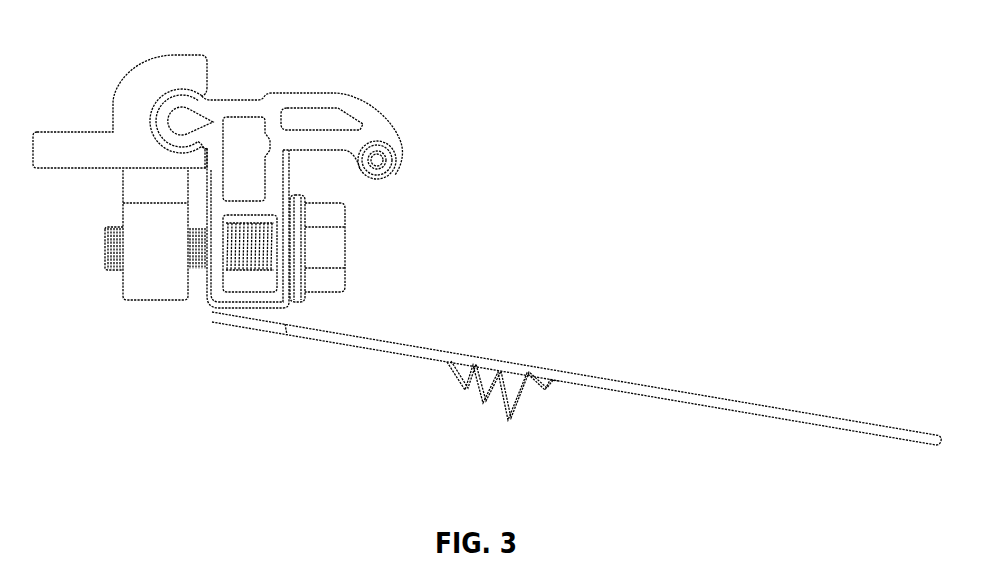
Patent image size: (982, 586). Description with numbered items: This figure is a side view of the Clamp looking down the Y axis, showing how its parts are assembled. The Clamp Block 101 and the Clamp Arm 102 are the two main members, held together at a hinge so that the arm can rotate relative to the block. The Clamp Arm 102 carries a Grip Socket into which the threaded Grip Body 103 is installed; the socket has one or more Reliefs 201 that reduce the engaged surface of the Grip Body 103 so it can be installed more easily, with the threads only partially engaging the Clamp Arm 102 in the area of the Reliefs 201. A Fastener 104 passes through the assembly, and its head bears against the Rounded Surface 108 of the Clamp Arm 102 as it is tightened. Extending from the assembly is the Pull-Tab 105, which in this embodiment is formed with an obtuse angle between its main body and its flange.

The Clamp Block 101 is at (147, 312).
The Clamp Arm 102 is at (282, 78).
The Grip Body 103 is at (392, 183).
The Fastener 104 is at (350, 248).
The Pull-Tab 105 is at (328, 352).
The Rounded Surface 108 is at (282, 265).
The Reliefs 201 is at (402, 152).